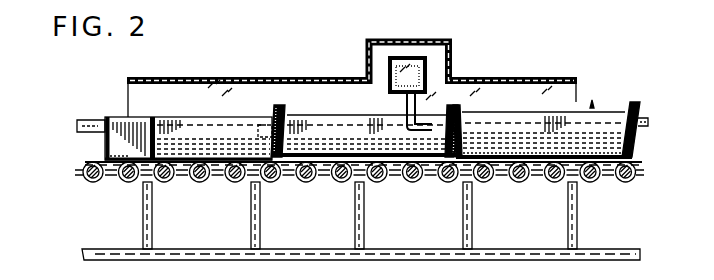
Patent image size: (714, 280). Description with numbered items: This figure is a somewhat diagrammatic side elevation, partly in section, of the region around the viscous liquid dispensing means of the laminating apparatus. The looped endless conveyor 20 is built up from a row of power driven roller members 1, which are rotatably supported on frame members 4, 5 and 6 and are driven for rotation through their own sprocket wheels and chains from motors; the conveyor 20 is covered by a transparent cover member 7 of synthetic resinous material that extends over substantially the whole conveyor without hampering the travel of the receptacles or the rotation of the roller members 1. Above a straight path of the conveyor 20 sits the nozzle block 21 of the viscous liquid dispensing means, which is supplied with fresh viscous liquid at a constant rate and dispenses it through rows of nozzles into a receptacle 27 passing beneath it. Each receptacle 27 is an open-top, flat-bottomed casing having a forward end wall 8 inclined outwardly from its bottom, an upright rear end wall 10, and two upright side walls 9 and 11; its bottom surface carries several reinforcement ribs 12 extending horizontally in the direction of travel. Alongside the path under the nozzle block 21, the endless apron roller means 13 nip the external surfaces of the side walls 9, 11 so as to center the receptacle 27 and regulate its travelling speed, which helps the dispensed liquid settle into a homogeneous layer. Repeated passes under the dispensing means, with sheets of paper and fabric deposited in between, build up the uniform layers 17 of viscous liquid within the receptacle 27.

The power driven roller members 1 is at (168, 183).
The frame member 4 is at (510, 184).
The frame member 5 is at (472, 205).
The frame member 6 is at (314, 248).
The transparent cover member 7 is at (230, 77).
The forward end wall 8 is at (272, 110).
The side wall 9 is at (179, 124).
The rear end wall 10 is at (471, 123).
The side wall 11 is at (122, 122).
The reinforcement ribs 12 is at (114, 182).
The endless apron roller means 13 is at (566, 103).
The layers of viscous liquid 17 is at (613, 128).
The endless conveyor 20 is at (314, 184).
The nozzle block 21 is at (393, 82).
The receptacle 27 is at (323, 114).